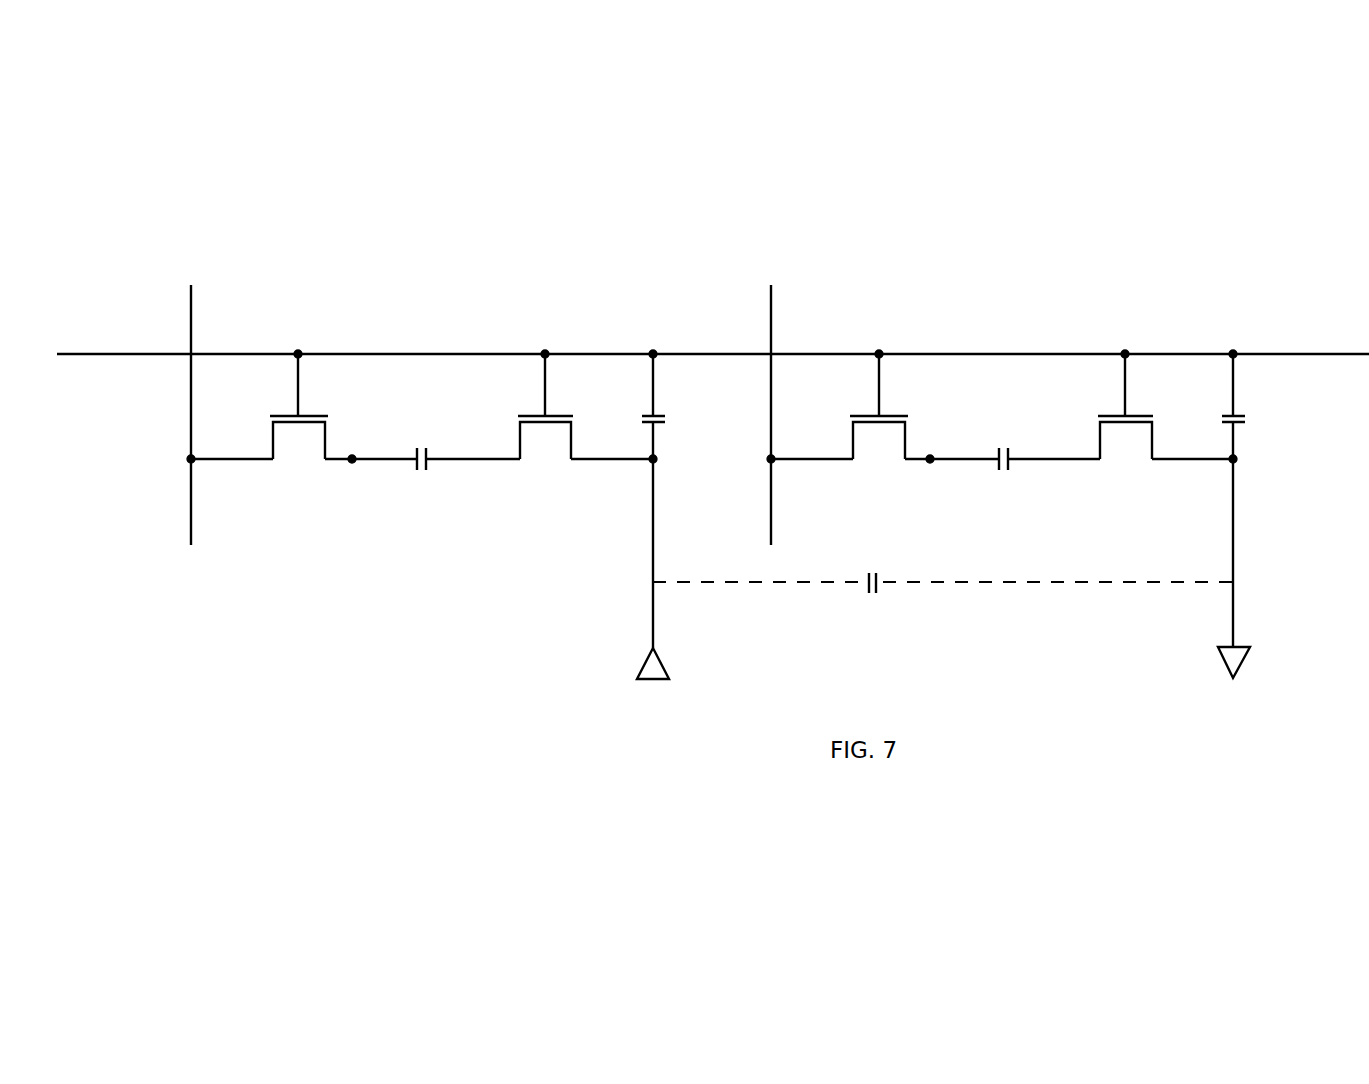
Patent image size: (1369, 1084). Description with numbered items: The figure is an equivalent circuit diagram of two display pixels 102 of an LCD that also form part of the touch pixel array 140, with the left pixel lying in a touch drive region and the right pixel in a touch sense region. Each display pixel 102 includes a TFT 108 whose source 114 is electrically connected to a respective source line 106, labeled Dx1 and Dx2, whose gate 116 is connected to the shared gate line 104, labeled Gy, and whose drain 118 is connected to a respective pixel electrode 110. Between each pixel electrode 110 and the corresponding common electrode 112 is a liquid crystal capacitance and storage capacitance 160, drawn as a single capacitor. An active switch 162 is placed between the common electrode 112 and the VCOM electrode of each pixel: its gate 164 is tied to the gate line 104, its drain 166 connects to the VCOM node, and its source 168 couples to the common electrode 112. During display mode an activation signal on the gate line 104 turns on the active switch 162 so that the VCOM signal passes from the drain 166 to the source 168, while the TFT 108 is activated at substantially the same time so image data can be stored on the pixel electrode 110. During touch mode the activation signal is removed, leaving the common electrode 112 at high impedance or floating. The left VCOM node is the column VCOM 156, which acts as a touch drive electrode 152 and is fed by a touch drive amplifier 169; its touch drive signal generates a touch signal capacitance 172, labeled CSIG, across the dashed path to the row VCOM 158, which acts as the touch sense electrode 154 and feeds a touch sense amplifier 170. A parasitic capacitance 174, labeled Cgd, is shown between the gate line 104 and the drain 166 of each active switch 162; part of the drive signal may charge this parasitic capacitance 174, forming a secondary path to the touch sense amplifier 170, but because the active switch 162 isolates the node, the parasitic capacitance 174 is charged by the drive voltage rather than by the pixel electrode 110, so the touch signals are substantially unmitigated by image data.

The display pixel 102 is at (308, 291).
The gate line 104 is at (110, 354).
The source line 106 is at (191, 312).
The TFT 108 is at (292, 463).
The pixel electrode 110 is at (376, 461).
The common electrode 112 is at (451, 461).
The source 114 is at (191, 459).
The gate 116 is at (298, 354).
The drain 118 is at (352, 459).
The touch pixel array 140 is at (662, 291).
The touch drive electrode 152 is at (653, 625).
The touch sense electrode 154 is at (1233, 623).
The column VCOM 156 is at (653, 582).
The row VCOM 158 is at (1233, 582).
The liquid crystal capacitance and storage capacitance 160 is at (418, 471).
The active switch 162 is at (548, 464).
The gate 164 is at (545, 354).
The drain 166 is at (653, 459).
The source 168 is at (500, 453).
The touch drive amplifier 169 is at (662, 668).
The touch sense amplifier 170 is at (1243, 660).
The touch signal capacitance 172 is at (878, 581).
The parasitic capacitance 174 is at (660, 416).